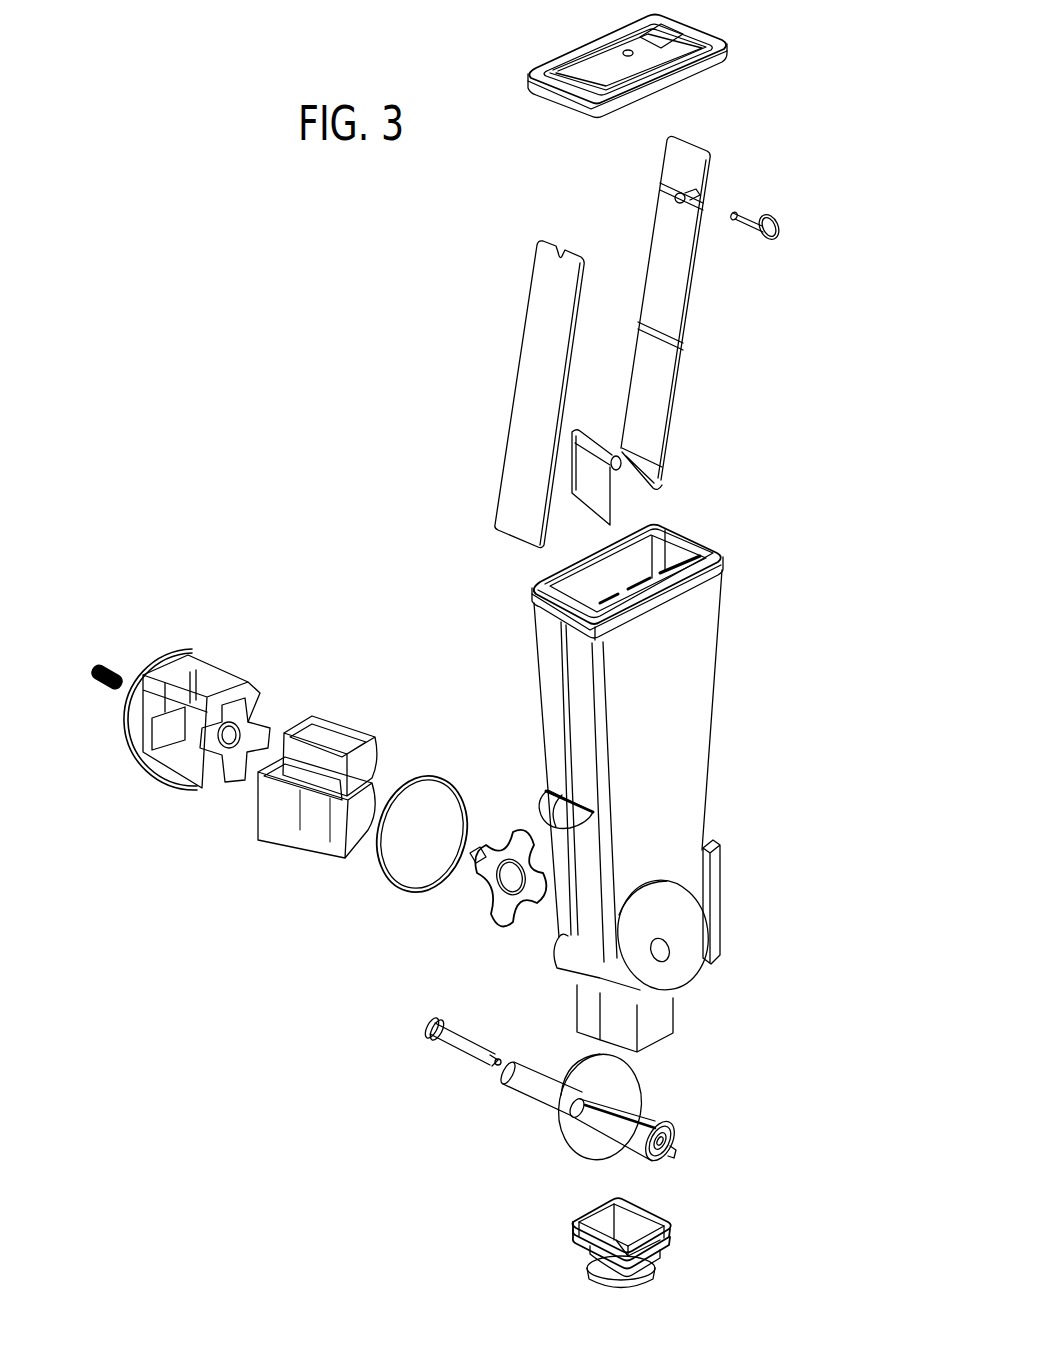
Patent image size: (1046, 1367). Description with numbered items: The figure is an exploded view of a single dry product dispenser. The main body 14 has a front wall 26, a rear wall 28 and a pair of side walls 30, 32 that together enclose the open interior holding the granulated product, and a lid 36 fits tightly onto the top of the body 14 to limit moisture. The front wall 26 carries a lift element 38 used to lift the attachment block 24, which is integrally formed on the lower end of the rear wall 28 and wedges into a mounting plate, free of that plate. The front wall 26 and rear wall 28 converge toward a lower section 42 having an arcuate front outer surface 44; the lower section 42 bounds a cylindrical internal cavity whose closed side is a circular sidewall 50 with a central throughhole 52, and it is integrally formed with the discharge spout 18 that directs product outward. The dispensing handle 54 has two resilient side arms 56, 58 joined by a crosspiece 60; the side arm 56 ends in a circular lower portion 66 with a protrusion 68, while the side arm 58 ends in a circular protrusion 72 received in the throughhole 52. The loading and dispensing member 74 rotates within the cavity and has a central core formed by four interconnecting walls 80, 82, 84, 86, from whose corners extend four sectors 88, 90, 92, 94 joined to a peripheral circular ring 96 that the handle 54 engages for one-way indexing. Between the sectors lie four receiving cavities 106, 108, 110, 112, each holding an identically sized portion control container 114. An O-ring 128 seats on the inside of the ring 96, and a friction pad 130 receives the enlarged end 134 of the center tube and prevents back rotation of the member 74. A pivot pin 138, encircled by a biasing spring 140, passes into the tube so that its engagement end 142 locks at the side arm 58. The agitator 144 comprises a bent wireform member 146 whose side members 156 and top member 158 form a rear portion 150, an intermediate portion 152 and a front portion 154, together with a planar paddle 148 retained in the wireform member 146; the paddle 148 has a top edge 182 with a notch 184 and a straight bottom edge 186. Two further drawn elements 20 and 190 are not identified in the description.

The main body 14 is at (625, 781).
The discharge spout 18 is at (592, 1020).
The bottom cap 20 is at (663, 1258).
The attachment block 24 is at (721, 901).
The front wall 26 is at (628, 736).
The rear wall 28 is at (683, 553).
The side wall 30 is at (588, 582).
The side wall 32 is at (688, 645).
The lid 36 is at (591, 45).
The lift element 38 is at (550, 805).
The lower section 42 is at (590, 938).
The arcuate front outer surface 44 is at (568, 972).
The circular sidewall 50 is at (669, 915).
The central throughhole 52 is at (661, 954).
The dispensing handle 54 is at (596, 1111).
The side arm 56 is at (565, 1084).
The side arm 58 is at (653, 1106).
The crosspiece 60 is at (530, 1088).
The circular lower portion 66 is at (618, 1078).
The protrusion 68 is at (650, 1112).
The circular protrusion 72 is at (672, 1133).
The loading and dispensing member 74 is at (222, 747).
The interconnecting wall 80 is at (217, 703).
The interconnecting wall 82 is at (187, 741).
The interconnecting wall 84 is at (230, 764).
The interconnecting wall 86 is at (240, 726).
The sector 88 is at (237, 671).
The sector 90 is at (150, 693).
The sector 92 is at (180, 780).
The sector 94 is at (238, 772).
The peripheral circular ring 96 is at (150, 660).
The receiving cavity 106 is at (231, 778).
The receiving cavity 108 is at (150, 725).
The receiving cavity 110 is at (187, 670).
The receiving cavity 112 is at (256, 712).
The portion control container 114 is at (357, 720).
The O-ring 128 is at (447, 777).
The friction pad 130 is at (482, 890).
The enlarged end 134 is at (305, 710).
The pivot pin 138 is at (443, 1083).
The biasing spring 140 is at (90, 667).
The engagement end 142 is at (503, 1064).
The agitator 144 is at (637, 320).
The wireform member 146 is at (695, 332).
The paddle 148 is at (507, 365).
The rear portion 150 is at (683, 389).
The intermediate portion 152 is at (631, 489).
The front portion 154 is at (568, 478).
The side member 156 is at (653, 245).
The top member 158 is at (683, 310).
The top edge 182 is at (562, 250).
The notch 184 is at (534, 247).
The bottom edge 186 is at (518, 546).
The screw 190 is at (751, 214).